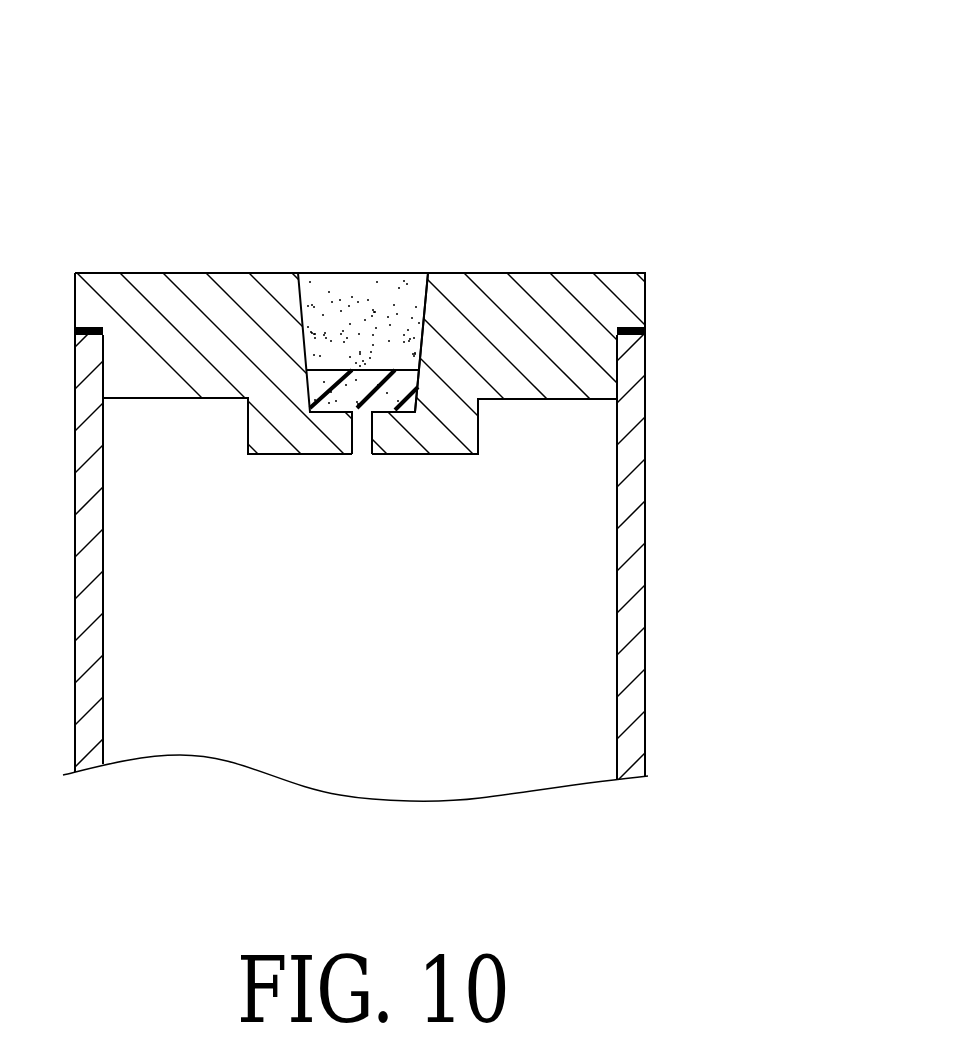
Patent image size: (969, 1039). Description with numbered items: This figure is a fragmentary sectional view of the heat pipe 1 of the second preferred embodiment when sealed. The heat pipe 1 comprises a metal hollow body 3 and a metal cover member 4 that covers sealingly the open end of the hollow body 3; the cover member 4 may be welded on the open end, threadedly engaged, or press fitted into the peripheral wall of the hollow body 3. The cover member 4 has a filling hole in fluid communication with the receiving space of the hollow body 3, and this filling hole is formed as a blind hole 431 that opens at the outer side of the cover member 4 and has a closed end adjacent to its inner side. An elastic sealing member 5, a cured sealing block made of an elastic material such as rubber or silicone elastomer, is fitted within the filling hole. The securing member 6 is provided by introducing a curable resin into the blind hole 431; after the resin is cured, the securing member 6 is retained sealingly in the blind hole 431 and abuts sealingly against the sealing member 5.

The heat pipe 1 is at (682, 238).
The metal hollow body 3 is at (650, 612).
The metal cover member 4 is at (574, 268).
The blind hole 431 is at (424, 340).
The elastic sealing member 5 is at (405, 335).
The securing member 6 is at (326, 250).